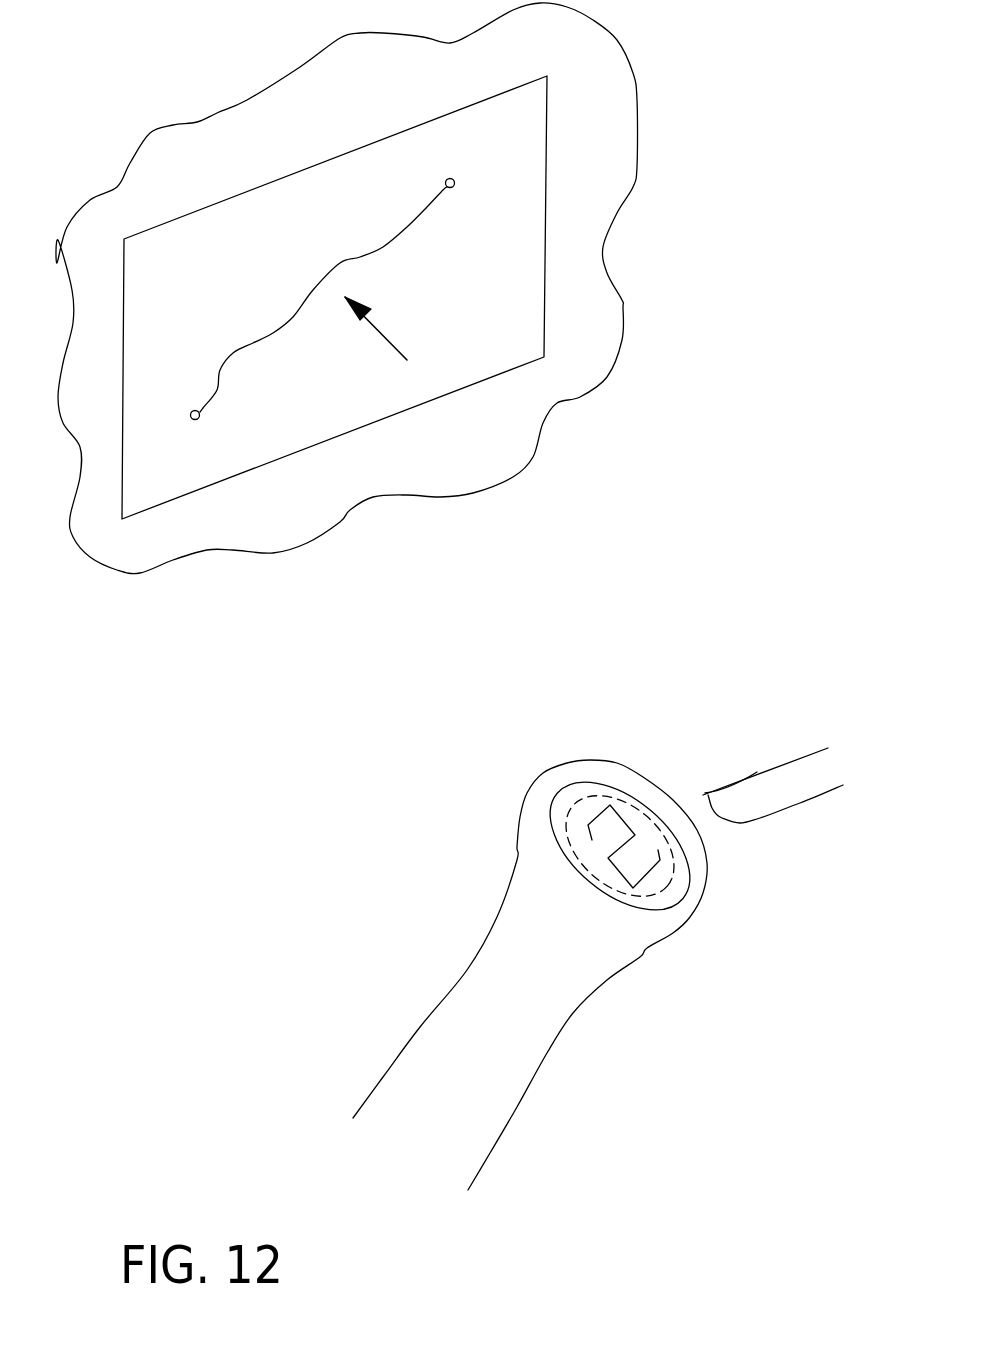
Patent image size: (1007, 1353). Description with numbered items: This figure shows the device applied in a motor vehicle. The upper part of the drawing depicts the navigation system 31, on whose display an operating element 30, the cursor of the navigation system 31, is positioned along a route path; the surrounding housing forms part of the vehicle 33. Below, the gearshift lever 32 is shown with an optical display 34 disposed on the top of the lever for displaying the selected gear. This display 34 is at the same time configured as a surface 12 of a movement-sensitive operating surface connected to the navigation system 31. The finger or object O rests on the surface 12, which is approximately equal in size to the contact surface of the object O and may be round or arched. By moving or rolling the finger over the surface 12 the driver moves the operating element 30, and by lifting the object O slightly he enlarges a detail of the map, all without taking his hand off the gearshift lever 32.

The operating element 30 is at (382, 337).
The navigation system 31 is at (310, 413).
The gearshift lever 32 is at (513, 923).
The gearshift selector 33 is at (432, 465).
The optical display 34 is at (587, 790).
The surface 12 is at (643, 820).
The object O is at (808, 776).